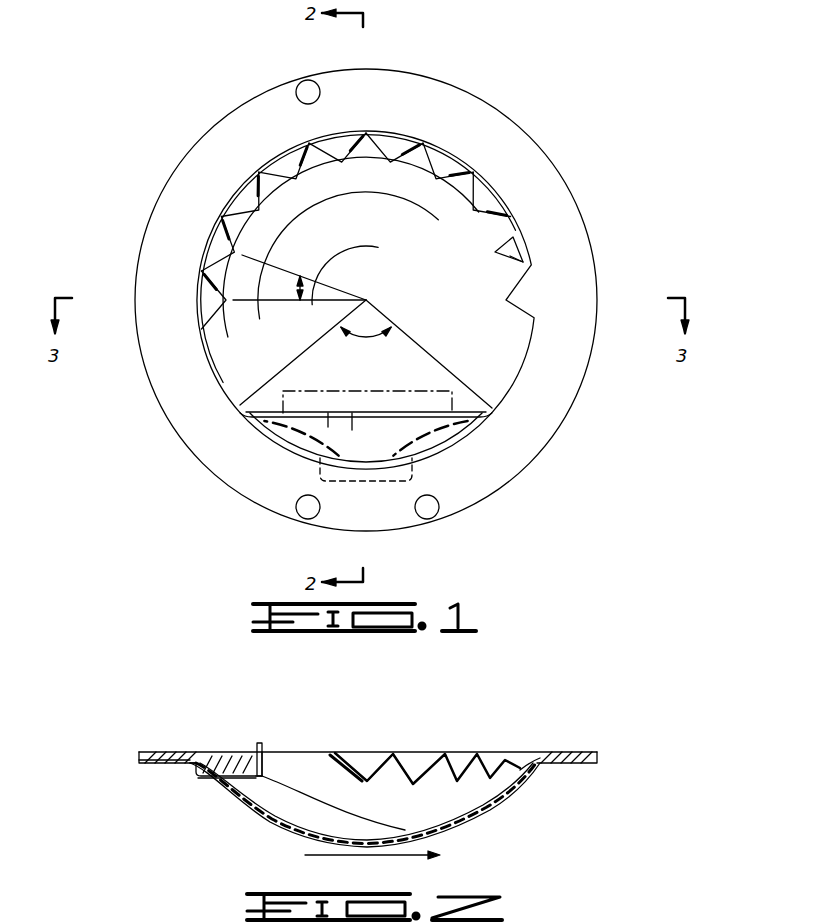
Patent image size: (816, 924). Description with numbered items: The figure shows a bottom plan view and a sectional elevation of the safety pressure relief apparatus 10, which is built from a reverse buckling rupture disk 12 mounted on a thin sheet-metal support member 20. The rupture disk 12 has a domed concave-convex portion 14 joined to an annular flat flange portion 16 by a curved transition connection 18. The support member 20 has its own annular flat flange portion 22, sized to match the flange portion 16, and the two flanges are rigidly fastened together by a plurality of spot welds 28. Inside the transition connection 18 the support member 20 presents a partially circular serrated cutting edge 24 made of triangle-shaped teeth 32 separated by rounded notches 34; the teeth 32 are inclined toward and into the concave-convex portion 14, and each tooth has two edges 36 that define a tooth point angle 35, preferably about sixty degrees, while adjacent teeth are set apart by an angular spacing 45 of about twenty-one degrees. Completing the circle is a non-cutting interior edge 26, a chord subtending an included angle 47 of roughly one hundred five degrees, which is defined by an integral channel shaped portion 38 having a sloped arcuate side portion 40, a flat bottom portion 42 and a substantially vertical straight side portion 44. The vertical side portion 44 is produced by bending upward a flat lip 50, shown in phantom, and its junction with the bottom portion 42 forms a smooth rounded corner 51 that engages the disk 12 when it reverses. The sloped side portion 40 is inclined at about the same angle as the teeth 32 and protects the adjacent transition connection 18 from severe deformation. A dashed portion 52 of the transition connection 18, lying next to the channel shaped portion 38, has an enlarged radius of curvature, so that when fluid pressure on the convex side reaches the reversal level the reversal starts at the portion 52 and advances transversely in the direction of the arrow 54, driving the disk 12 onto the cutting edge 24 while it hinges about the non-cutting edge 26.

In FIG. 1, the safety pressure relief apparatus 10 is at (373, 271).
In FIG. 2, the safety pressure relief apparatus 10 is at (354, 720).
In FIG. 1, the reverse buckling rupture disk 12 is at (500, 357).
In FIG. 2, the reverse buckling rupture disk 12 is at (357, 809).
In FIG. 1, the concave-convex portion 14 is at (437, 279).
In FIG. 2, the concave-convex portion 14 is at (277, 826).
In FIG. 2, the annular flat flange portion 16 is at (155, 763).
In FIG. 1, the curved transition connection 18 is at (283, 447).
In FIG. 2, the curved transition connection 18 is at (542, 780).
In FIG. 1, the support member 20 is at (373, 300).
In FIG. 2, the support member 20 is at (347, 733).
In FIG. 1, the annular flat flange portion 22 is at (538, 165).
In FIG. 2, the annular flat flange portion 22 is at (170, 751).
In FIG. 1, the partially circular serrated cutting edge 24 is at (356, 235).
In FIG. 2, the partially circular serrated cutting edge 24 is at (425, 784).
In FIG. 1, the non-cutting interior edge 26 is at (375, 402).
In FIG. 2, the non-cutting interior edge 26 is at (270, 746).
In FIG. 1, the spot welds 28 is at (304, 82).
In FIG. 1, the triangle-shaped teeth 32 is at (257, 206).
In FIG. 2, the triangle-shaped teeth 32 is at (370, 782).
In FIG. 1, the rounded notches 34 is at (262, 180).
In FIG. 2, the rounded notches 34 is at (393, 762).
In FIG. 1, the tooth point angle 35 is at (512, 256).
In FIG. 1, the tooth edges 36 is at (490, 243).
In FIG. 1, the channel shaped portion 38 is at (414, 403).
In FIG. 2, the channel shaped portion 38 is at (237, 758).
In FIG. 1, the sloped arcuate side portion 40 is at (456, 434).
In FIG. 2, the sloped arcuate side portion 40 is at (215, 770).
In FIG. 1, the flat bottom portion 42 is at (352, 430).
In FIG. 2, the flat bottom portion 42 is at (280, 790).
In FIG. 1, the vertical straight side portion 44 is at (328, 427).
In FIG. 2, the vertical straight side portion 44 is at (258, 745).
In FIG. 1, the angular spacing 45 is at (297, 286).
In FIG. 1, the included angle 47 is at (369, 338).
In FIG. 1, the flat lip 50 is at (305, 382).
In FIG. 2, the corner 51 is at (262, 776).
In FIG. 1, the portion of enlarged radius of curvature 52 is at (361, 481).
In FIG. 2, the portion of enlarged radius of curvature 52 is at (192, 770).
In FIG. 2, the arrow 54 is at (385, 855).